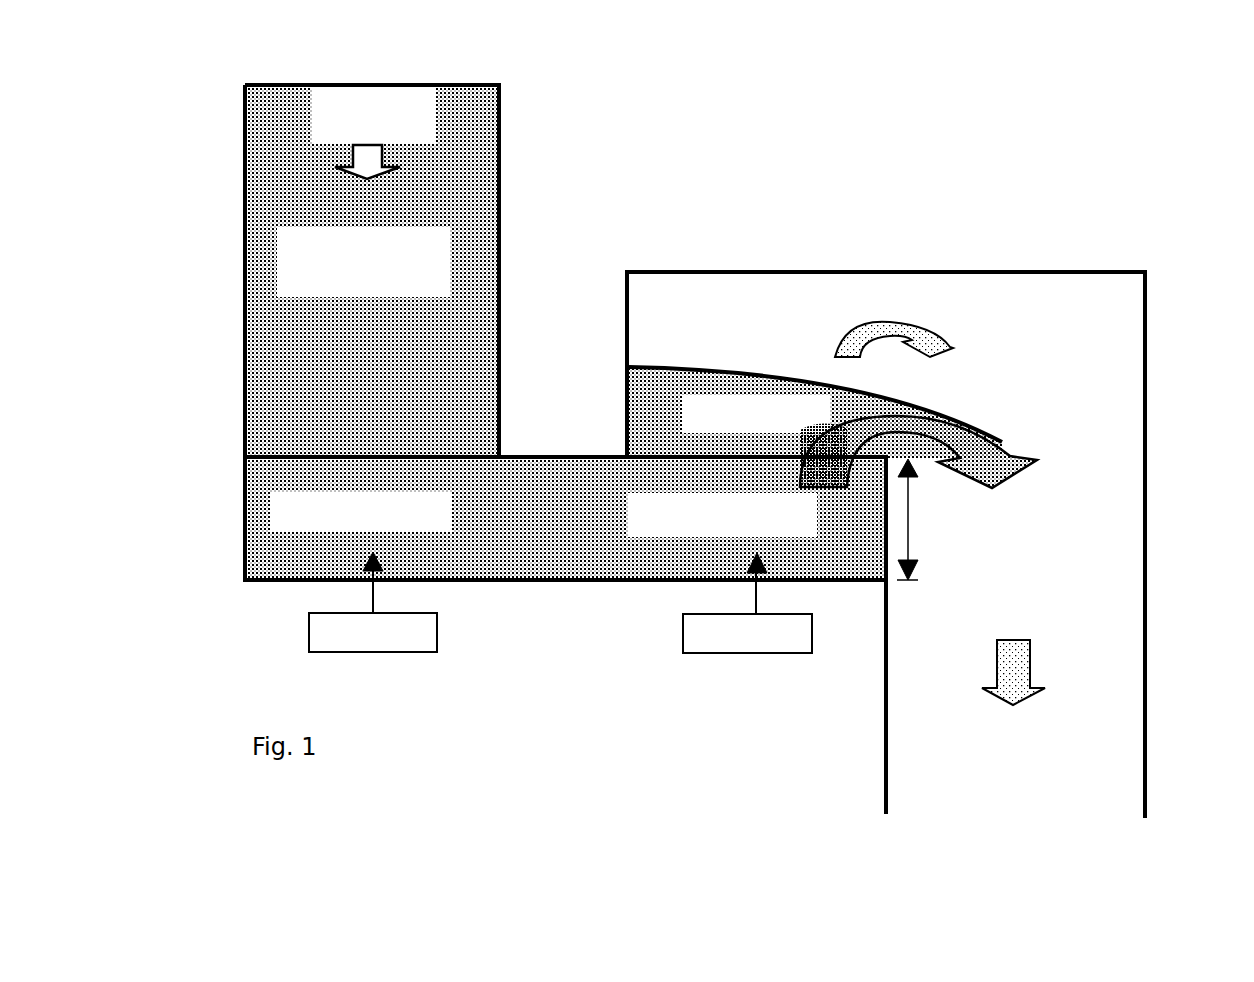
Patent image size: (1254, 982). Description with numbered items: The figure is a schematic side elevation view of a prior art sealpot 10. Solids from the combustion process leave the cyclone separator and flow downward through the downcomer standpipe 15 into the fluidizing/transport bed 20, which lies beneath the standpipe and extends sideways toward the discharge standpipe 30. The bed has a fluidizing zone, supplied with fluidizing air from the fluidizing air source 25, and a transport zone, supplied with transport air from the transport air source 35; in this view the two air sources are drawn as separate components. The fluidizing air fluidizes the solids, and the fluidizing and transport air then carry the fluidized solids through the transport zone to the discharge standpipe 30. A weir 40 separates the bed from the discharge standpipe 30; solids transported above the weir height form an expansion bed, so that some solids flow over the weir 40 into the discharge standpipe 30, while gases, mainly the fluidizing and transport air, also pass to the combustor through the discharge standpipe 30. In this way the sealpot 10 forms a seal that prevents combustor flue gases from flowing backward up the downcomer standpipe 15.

The sealpot 10 is at (218, 98).
The downcomer standpipe 15 is at (500, 215).
The fluidizing/transport bed 20 is at (545, 582).
The fluidizing air source 25 is at (309, 638).
The discharge standpipe 30 is at (1148, 355).
The transport air source 35 is at (682, 637).
The weir 40 is at (886, 522).